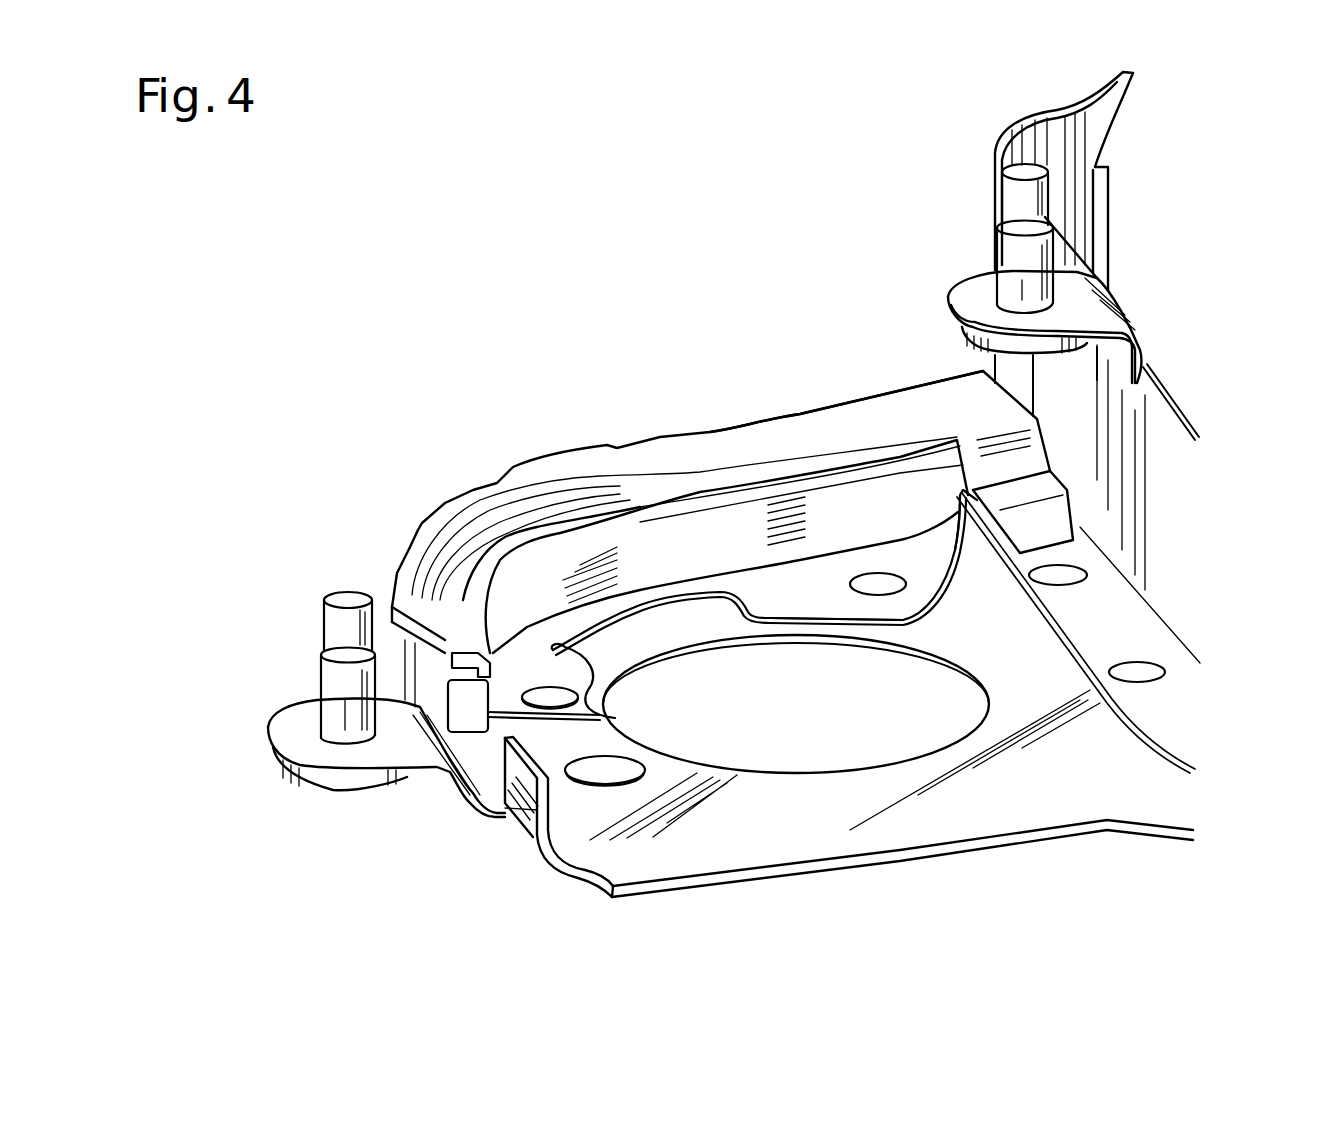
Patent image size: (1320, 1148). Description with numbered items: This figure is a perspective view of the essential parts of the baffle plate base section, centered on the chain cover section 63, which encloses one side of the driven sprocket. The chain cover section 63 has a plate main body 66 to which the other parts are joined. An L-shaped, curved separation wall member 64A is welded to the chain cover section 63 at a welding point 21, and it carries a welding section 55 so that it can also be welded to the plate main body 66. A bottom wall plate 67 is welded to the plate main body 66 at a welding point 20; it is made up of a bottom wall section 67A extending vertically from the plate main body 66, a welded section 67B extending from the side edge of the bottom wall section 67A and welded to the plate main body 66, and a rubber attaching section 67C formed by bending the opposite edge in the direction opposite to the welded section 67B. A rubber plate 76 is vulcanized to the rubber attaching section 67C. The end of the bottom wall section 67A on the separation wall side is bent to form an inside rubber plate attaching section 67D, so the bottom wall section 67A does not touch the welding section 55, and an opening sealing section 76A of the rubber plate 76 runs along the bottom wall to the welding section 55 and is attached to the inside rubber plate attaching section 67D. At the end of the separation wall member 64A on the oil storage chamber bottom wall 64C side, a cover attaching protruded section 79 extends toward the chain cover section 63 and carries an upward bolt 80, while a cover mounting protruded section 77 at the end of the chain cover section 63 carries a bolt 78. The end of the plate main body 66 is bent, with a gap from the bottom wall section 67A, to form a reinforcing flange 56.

The welding point 20 is at (551, 698).
The welding point 21 is at (1058, 580).
The welding section 55 is at (1117, 630).
The reinforcing flange 56 is at (372, 690).
The chain cover section 63 is at (883, 866).
The separation wall member 64A is at (1137, 415).
The oil storage chamber bottom wall 64C is at (995, 137).
The plate main body 66 is at (960, 817).
The bottom wall plate 67 is at (690, 600).
The bottom wall section 67A is at (627, 548).
The welded section 67B is at (820, 604).
The rubber attaching section 67C is at (463, 653).
The inside rubber plate attaching section 67D is at (965, 530).
The rubber plate 76 is at (535, 458).
The opening sealing section 76A is at (1050, 528).
The cover mounting protruded section 77 is at (390, 747).
The bolt 78 is at (345, 625).
The cover attaching protruded section 79 is at (1090, 312).
The bolt 80 is at (1017, 252).